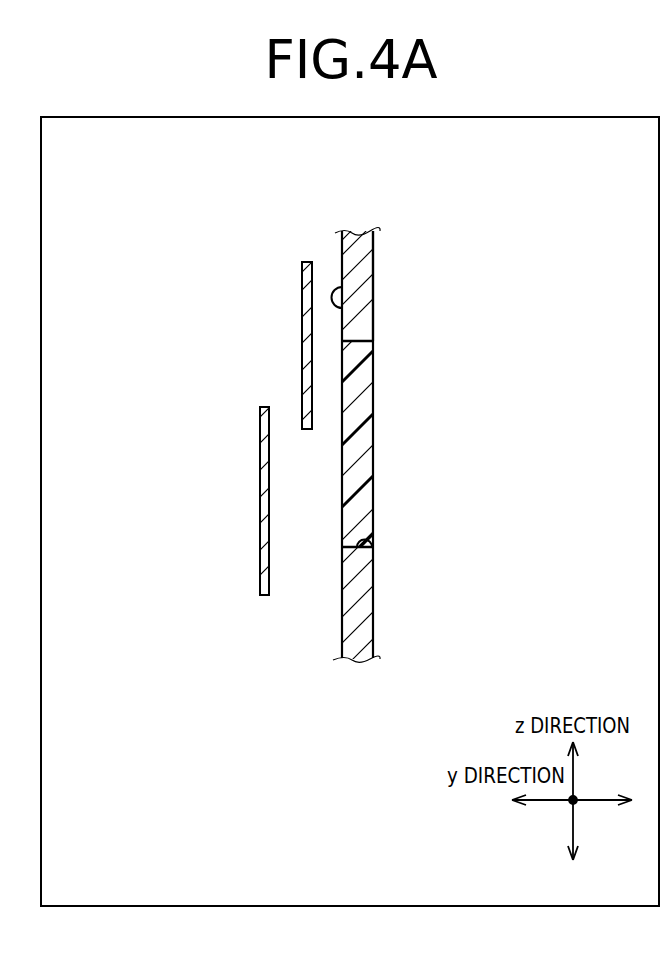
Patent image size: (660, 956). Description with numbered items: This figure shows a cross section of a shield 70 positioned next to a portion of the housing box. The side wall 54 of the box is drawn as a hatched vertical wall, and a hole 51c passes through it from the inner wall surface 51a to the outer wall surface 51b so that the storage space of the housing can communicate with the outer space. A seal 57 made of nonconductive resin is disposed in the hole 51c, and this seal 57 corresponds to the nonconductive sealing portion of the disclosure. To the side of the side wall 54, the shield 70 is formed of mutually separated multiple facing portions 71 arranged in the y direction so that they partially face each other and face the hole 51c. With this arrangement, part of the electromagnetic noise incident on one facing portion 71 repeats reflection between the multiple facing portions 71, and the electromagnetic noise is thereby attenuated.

The shield 70 is at (254, 407).
The facing portion 71 is at (253, 288).
The side wall 54 is at (374, 233).
The seal 57 is at (365, 438).
The inner wall surface 51a is at (340, 308).
The outer wall surface 51b is at (374, 265).
The hole 51c is at (370, 538).